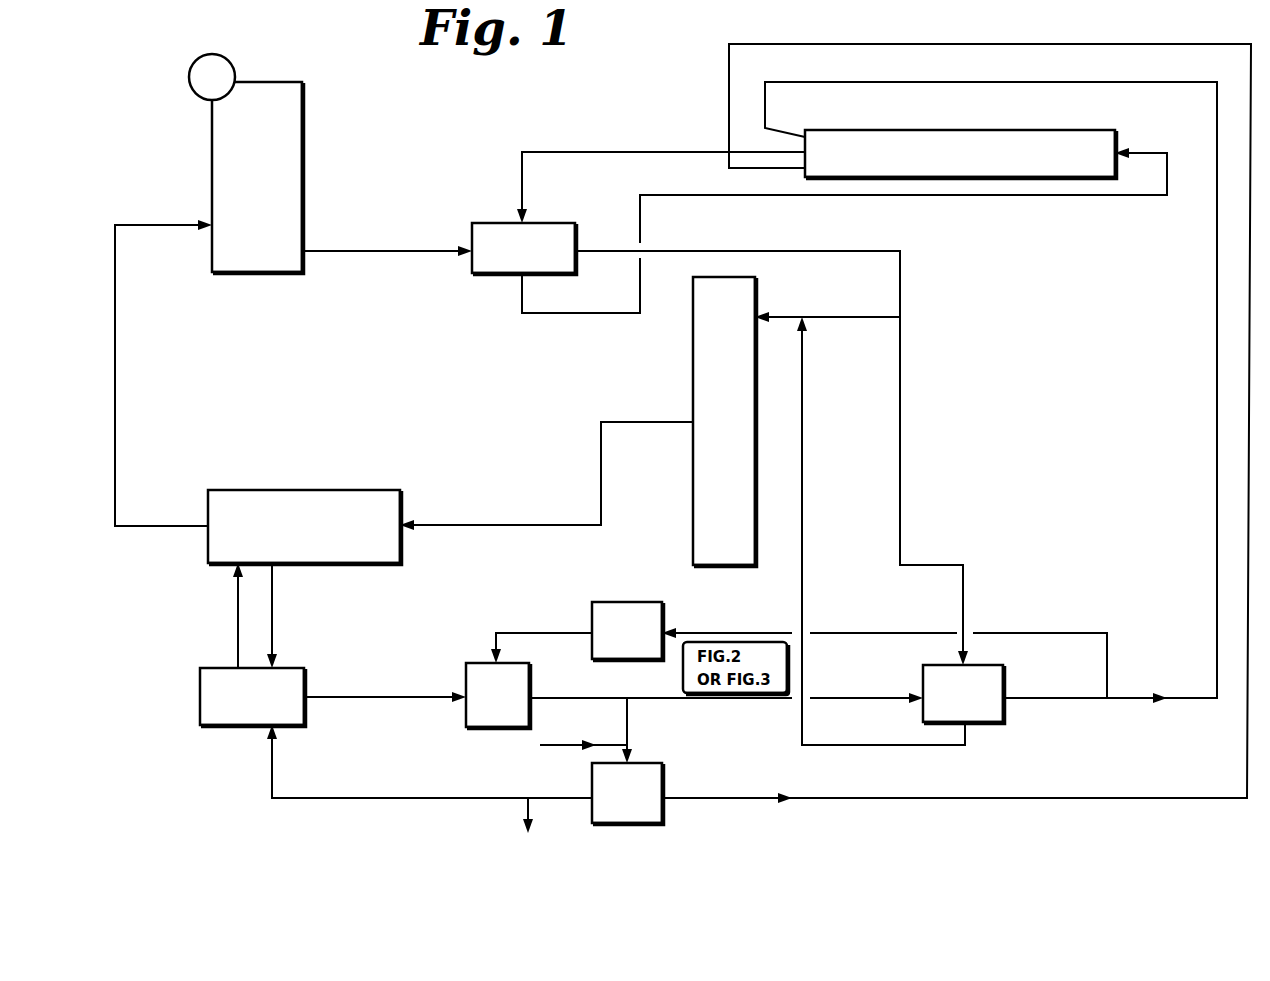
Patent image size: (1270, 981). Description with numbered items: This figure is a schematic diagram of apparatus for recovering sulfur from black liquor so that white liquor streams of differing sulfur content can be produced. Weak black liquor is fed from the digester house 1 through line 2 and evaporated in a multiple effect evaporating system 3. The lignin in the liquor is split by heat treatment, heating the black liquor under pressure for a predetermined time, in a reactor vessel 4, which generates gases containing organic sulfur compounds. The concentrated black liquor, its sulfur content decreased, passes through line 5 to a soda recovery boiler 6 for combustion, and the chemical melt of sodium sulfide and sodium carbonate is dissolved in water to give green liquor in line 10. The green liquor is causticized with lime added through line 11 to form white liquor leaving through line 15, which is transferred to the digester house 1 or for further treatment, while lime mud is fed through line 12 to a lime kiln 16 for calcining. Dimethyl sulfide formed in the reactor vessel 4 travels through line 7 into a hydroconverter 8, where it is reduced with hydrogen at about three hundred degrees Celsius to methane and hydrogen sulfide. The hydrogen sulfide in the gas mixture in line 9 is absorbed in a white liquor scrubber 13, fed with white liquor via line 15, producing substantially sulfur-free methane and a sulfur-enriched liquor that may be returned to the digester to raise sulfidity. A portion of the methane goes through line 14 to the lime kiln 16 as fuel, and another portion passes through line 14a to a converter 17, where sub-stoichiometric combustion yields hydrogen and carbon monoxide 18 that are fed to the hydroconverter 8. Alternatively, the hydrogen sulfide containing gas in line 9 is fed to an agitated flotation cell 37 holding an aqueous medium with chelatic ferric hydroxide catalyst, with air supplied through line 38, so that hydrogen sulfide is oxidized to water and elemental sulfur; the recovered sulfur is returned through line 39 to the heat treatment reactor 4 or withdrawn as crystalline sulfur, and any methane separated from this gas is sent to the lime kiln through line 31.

The digester house 1 is at (693, 335).
The line 2 is at (490, 525).
The multiple effect evaporating system 3 is at (336, 490).
The reactor vessel 4 is at (295, 667).
The line 5 is at (143, 526).
The soda recovery boiler 6 is at (212, 154).
The line 7 is at (410, 697).
The hydroconverter 8 is at (500, 727).
The line 9 is at (530, 697).
The line 10 is at (410, 252).
The line 11 is at (522, 186).
The line 12 is at (522, 307).
The white liquor scrubber 13 is at (1003, 722).
The line 14 is at (1048, 698).
The line 14a is at (1107, 632).
The line 15 is at (900, 281).
The lime kiln 16 is at (1073, 130).
The converter 17 is at (618, 602).
The hydrogen and carbon monoxide 18 is at (496, 636).
The line 31 is at (690, 798).
The agitated flotation cell 37 is at (662, 763).
The line 38 is at (565, 745).
The line 39 is at (272, 768).